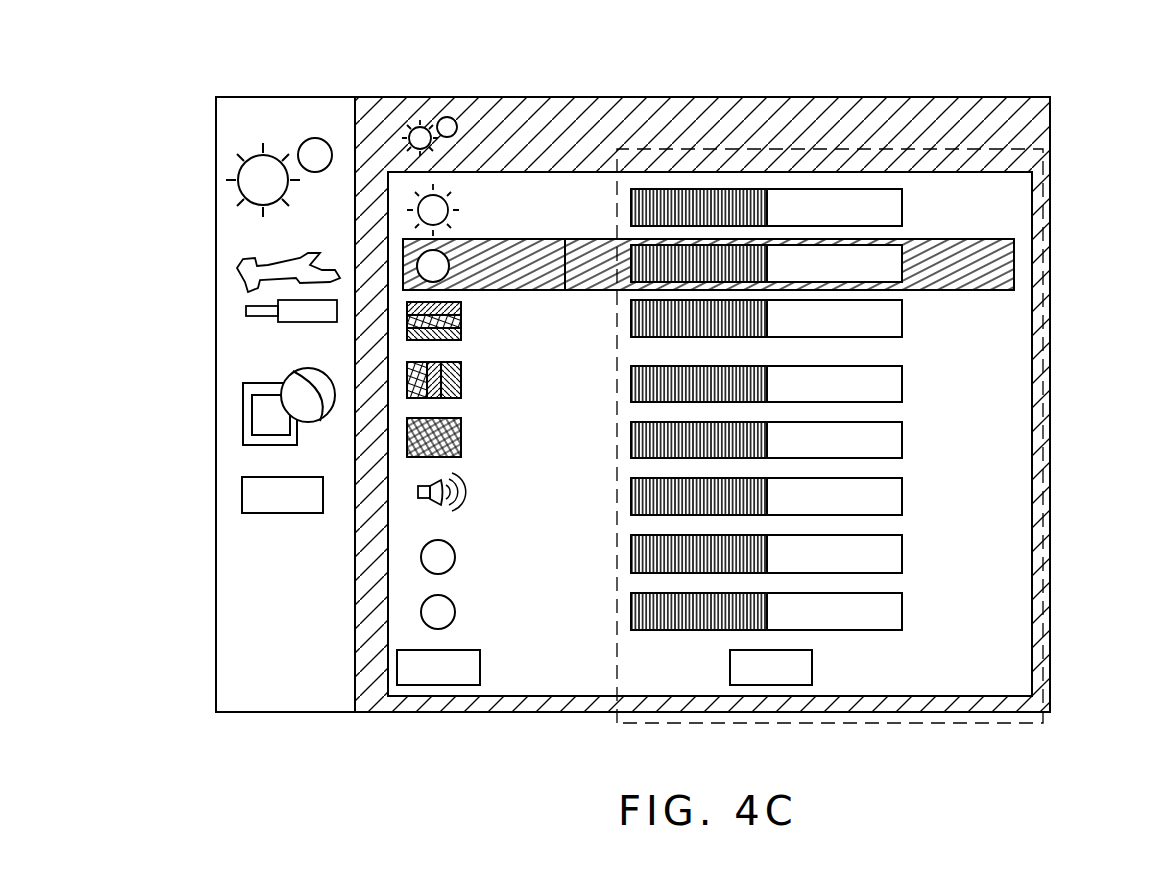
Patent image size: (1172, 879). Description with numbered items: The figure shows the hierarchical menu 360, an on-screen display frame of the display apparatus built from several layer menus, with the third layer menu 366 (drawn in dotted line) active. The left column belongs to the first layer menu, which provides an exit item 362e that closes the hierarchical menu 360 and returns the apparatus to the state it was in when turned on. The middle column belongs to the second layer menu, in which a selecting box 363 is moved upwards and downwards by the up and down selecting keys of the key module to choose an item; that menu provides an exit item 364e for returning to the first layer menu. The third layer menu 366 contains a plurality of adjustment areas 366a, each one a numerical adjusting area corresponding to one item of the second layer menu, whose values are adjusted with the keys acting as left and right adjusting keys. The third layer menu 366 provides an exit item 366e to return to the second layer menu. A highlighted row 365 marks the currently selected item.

The hierarchical menu 360 is at (1052, 482).
The exit item 362e is at (242, 497).
The selecting box 363 is at (505, 240).
The exit item 364e is at (480, 670).
The highlight bar 365 is at (948, 238).
The third layer menu 366 is at (1045, 235).
The adjustment area 366a is at (868, 253).
The exit item 366e is at (812, 670).